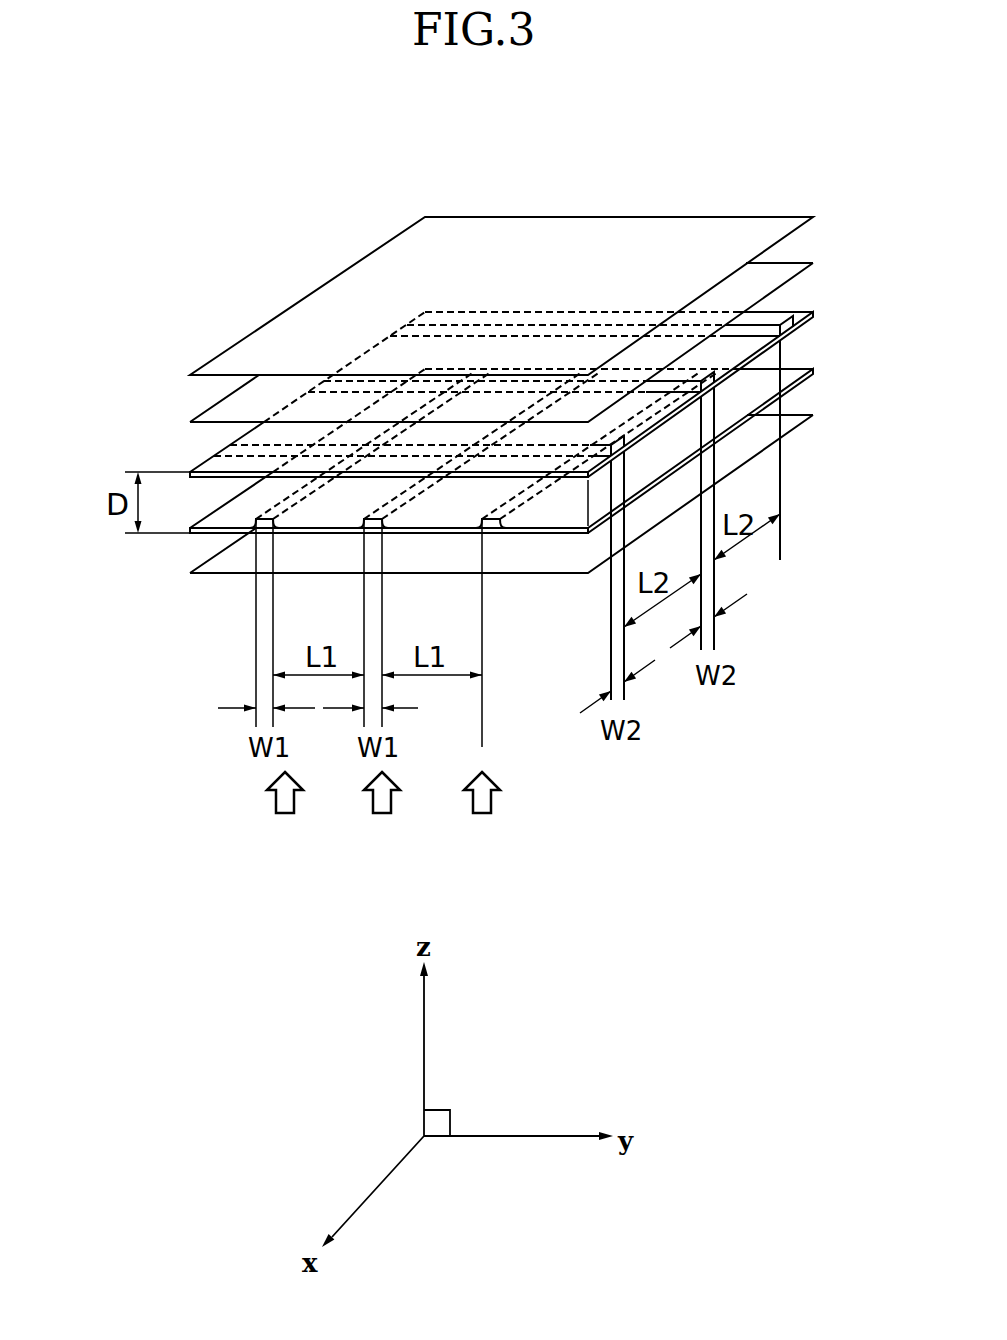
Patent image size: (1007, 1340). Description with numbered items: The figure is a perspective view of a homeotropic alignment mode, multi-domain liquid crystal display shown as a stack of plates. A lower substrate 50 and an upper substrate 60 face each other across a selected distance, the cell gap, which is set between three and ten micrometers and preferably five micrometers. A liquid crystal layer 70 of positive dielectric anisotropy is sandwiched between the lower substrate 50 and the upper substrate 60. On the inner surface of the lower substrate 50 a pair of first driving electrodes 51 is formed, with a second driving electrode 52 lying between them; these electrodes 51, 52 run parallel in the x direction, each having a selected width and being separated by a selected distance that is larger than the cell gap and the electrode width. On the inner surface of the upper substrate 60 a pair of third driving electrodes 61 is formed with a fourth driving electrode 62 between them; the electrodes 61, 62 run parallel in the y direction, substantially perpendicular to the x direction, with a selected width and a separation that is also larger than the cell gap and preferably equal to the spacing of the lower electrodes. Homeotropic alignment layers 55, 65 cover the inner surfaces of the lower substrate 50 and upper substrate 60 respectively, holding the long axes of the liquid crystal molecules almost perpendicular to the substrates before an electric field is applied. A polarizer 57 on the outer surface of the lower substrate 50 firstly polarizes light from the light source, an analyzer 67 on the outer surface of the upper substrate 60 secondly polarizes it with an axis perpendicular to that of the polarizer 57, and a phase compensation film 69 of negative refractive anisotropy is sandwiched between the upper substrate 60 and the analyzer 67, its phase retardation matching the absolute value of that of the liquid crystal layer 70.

The lower substrate 50 is at (548, 538).
The first driving electrodes 51 is at (247, 538).
The second driving electrode 52 is at (362, 535).
The alignment layer 55 is at (540, 538).
The polarizer 57 is at (210, 535).
The upper substrate 60 is at (780, 317).
The third driving electrodes 61 is at (413, 327).
The fourth driving electrode 62 is at (347, 368).
The alignment layer 65 is at (795, 328).
The analyzer 67 is at (740, 218).
The phase compensation film 69 is at (780, 272).
The liquid crystal layer 70 is at (677, 427).